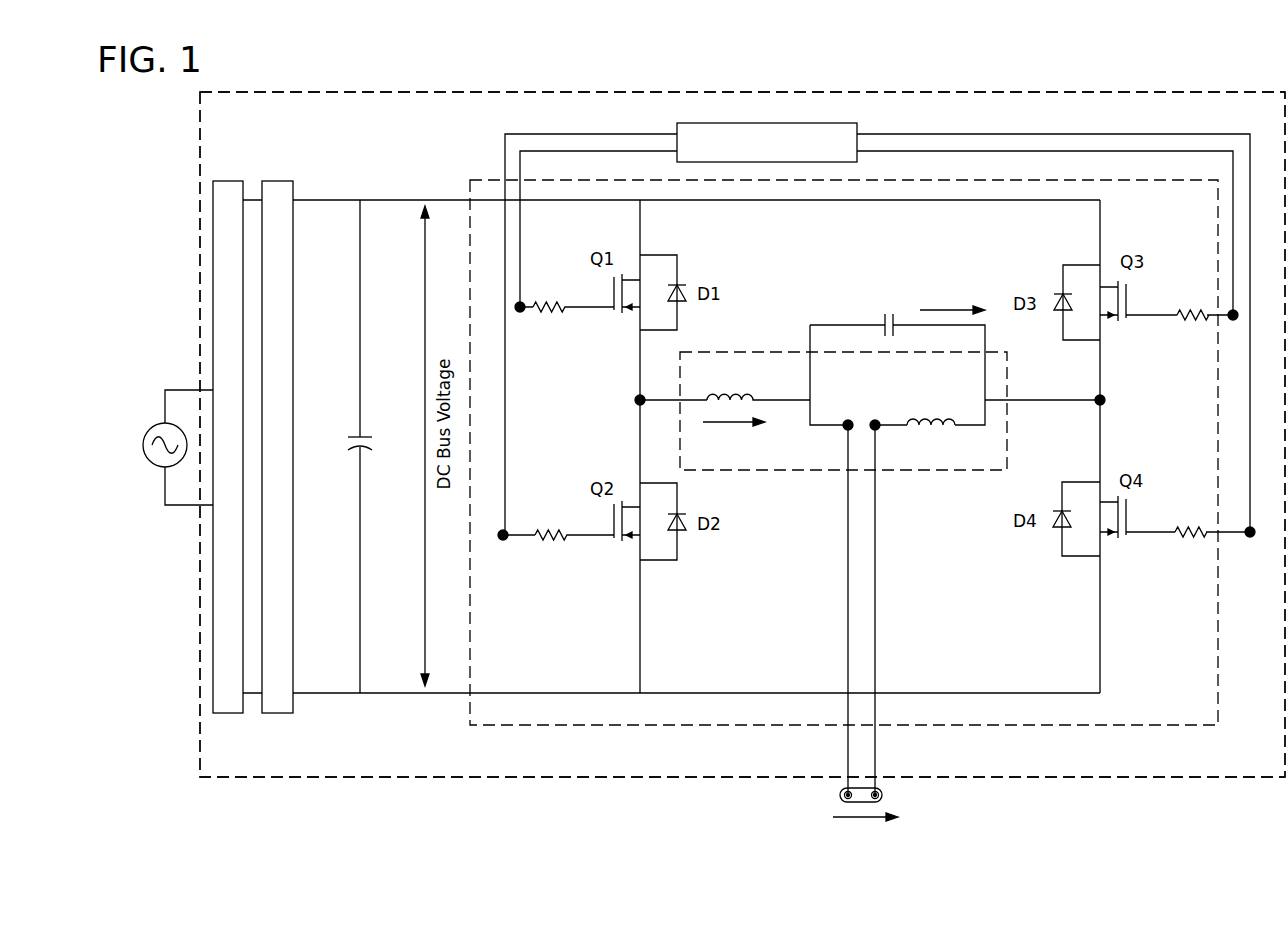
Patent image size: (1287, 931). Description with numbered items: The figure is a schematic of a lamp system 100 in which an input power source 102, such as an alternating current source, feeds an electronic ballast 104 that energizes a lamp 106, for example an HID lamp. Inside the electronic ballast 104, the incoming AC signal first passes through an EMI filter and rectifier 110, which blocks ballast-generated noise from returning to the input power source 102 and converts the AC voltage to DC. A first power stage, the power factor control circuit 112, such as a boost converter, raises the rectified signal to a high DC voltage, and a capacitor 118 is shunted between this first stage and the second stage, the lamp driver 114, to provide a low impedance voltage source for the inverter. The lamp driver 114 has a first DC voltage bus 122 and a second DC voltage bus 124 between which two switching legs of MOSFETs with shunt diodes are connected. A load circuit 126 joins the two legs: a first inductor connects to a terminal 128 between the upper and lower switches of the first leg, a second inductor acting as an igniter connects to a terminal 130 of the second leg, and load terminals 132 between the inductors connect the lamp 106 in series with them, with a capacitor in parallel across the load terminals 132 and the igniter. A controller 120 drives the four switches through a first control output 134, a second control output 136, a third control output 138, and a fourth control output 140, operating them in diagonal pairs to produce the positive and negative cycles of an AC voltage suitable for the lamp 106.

The lamp system 100 is at (455, 84).
The input power source 102 is at (150, 465).
The electronic ballast 104 is at (1048, 92).
The lamp 106 is at (884, 797).
The EMI filter and rectifier 110 is at (223, 716).
The power factor control circuit 112 is at (270, 716).
The lamp driver 114 is at (1012, 730).
The capacitor 118 is at (358, 452).
The controller 120 is at (848, 114).
The first DC voltage bus 122 is at (400, 197).
The second DC voltage bus 124 is at (380, 696).
The load circuit 126 is at (735, 350).
The terminal 128 is at (635, 400).
The terminal 130 is at (1105, 400).
The load terminals 132 is at (875, 425).
The first control output 134 is at (630, 150).
The second control output 136 is at (508, 130).
The third control output 138 is at (1090, 150).
The fourth control output 140 is at (1175, 133).